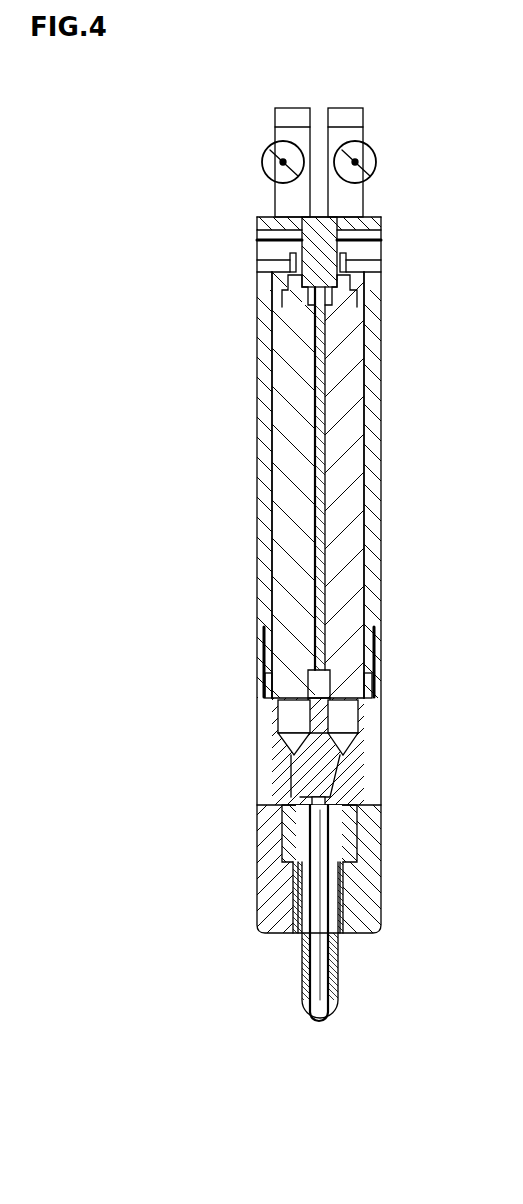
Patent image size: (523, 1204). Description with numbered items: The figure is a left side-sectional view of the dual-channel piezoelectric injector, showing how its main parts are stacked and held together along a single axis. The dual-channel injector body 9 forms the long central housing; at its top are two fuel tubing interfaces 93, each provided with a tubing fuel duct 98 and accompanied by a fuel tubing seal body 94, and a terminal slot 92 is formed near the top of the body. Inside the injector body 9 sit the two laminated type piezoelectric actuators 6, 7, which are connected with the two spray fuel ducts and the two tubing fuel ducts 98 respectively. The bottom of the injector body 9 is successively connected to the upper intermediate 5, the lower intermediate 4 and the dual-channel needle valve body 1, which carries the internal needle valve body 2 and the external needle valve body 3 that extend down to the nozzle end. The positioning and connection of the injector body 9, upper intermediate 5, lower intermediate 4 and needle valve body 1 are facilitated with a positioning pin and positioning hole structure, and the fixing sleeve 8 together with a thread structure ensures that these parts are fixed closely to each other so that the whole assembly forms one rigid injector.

The dual-channel needle valve body 1 is at (338, 900).
The internal needle valve body 2 is at (290, 805).
The external needle valve body 3 is at (290, 893).
The lower intermediate 4 is at (347, 833).
The upper intermediate 5 is at (343, 760).
The laminated type piezoelectric actuator 6 is at (353, 497).
The laminated type piezoelectric actuator 7 is at (287, 510).
The fixing sleeve 8 is at (360, 890).
The dual-channel injector body 9 is at (372, 383).
The terminal slot 92 is at (277, 253).
The fuel tubing interface 93 is at (353, 170).
The fuel tubing seal body 94 is at (343, 122).
The tubing fuel duct 98 is at (355, 162).